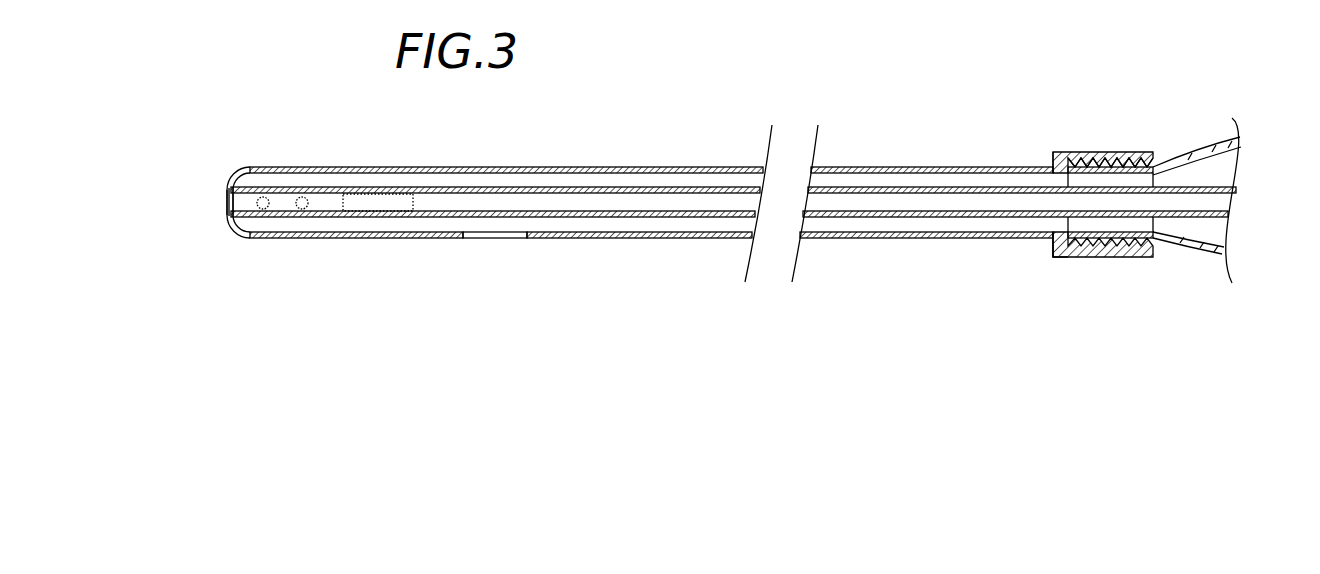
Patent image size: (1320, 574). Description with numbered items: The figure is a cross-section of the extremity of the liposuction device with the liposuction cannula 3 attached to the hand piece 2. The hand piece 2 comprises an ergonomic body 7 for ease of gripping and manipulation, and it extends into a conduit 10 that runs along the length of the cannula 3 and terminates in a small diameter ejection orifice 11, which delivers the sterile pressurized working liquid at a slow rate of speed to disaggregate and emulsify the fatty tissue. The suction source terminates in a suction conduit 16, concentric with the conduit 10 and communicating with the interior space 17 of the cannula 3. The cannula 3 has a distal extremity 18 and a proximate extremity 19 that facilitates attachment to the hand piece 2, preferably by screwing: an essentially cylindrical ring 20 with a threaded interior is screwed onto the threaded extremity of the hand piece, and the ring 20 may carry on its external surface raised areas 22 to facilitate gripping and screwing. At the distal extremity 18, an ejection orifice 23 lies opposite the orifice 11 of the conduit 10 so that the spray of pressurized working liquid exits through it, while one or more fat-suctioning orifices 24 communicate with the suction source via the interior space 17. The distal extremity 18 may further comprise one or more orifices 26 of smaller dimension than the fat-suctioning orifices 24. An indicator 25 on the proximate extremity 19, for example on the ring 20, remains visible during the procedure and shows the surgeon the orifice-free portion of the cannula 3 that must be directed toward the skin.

The hand piece 2 is at (1200, 117).
The liposuction cannula 3 is at (657, 243).
The ergonomic body 7 is at (1195, 247).
The conduit 10 is at (873, 183).
The ejection orifice 11 is at (230, 207).
The suction conduit 16 is at (1123, 178).
The interior space 17 is at (595, 180).
The distal extremity 18 is at (289, 146).
The proximate extremity 19 is at (997, 101).
The ring 20 is at (1097, 268).
The raised areas 22 is at (1066, 260).
The ejection orifice 23 is at (237, 203).
The fat-suctioning orifices 24 is at (380, 202).
The indicator 25 is at (1093, 149).
The orifices 26 is at (263, 208).